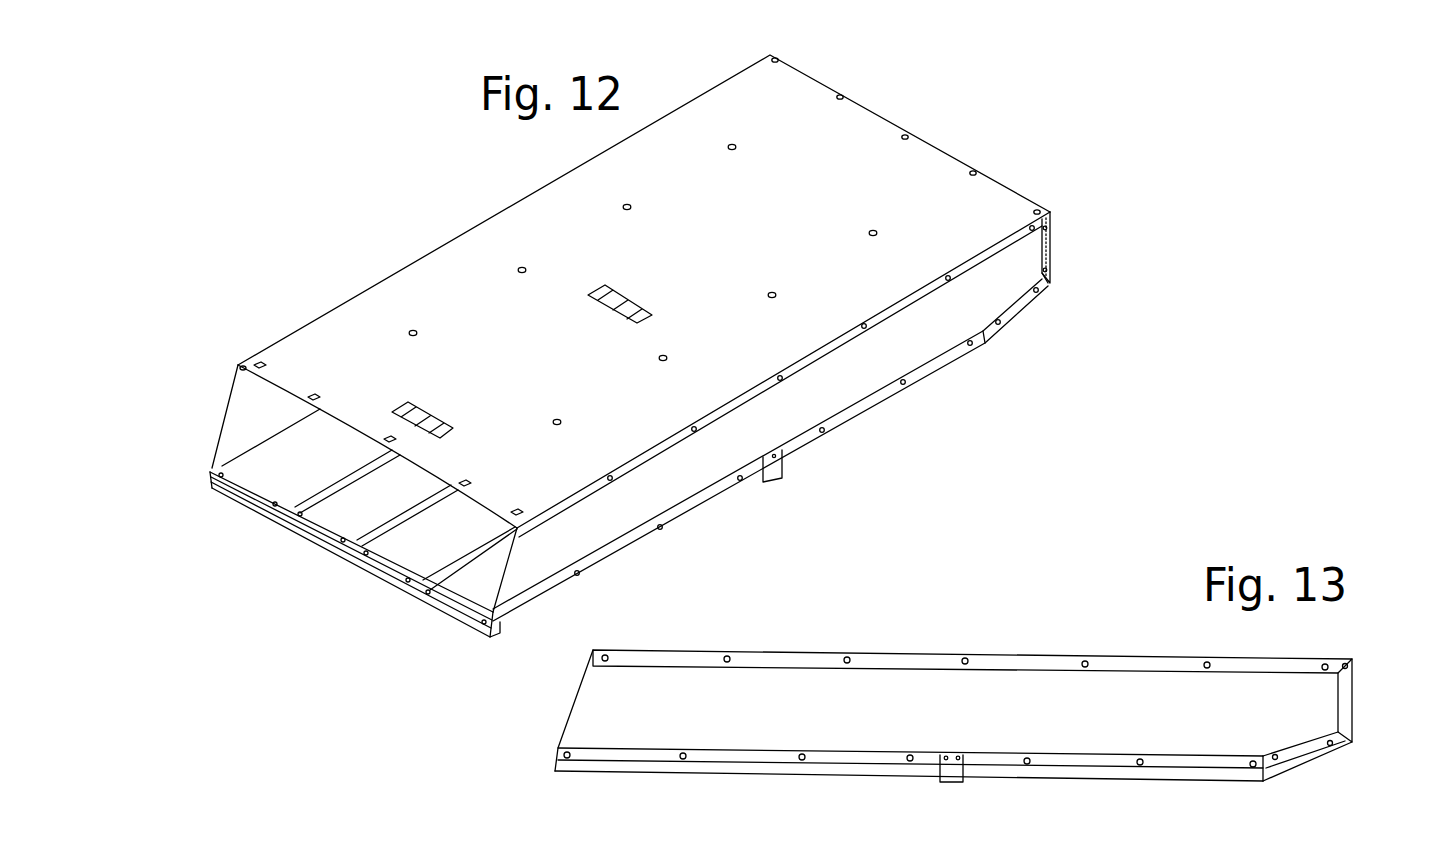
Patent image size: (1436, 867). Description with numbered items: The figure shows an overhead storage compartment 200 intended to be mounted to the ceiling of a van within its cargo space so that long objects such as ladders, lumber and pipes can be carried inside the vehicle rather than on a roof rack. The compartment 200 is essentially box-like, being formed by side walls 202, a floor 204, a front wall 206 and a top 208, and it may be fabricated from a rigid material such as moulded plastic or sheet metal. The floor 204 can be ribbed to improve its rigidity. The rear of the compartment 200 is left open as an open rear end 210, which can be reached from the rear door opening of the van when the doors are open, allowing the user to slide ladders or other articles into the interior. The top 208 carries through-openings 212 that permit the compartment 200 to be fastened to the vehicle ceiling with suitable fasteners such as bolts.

In FIG. 13, the overhead storage compartment 200 is at (930, 614).
In FIG. 12, the side walls 202 is at (698, 467).
In FIG. 13, the side walls 202 is at (778, 693).
In FIG. 12, the floor 204 is at (428, 548).
In FIG. 12, the front wall 206 is at (1050, 241).
In FIG. 13, the front wall 206 is at (1354, 687).
In FIG. 12, the top 208 is at (453, 273).
In FIG. 13, the top 208 is at (1035, 652).
In FIG. 12, the open rear end 210 is at (306, 457).
In FIG. 13, the open rear end 210 is at (562, 688).
In FIG. 12, the through-openings 212 is at (632, 207).